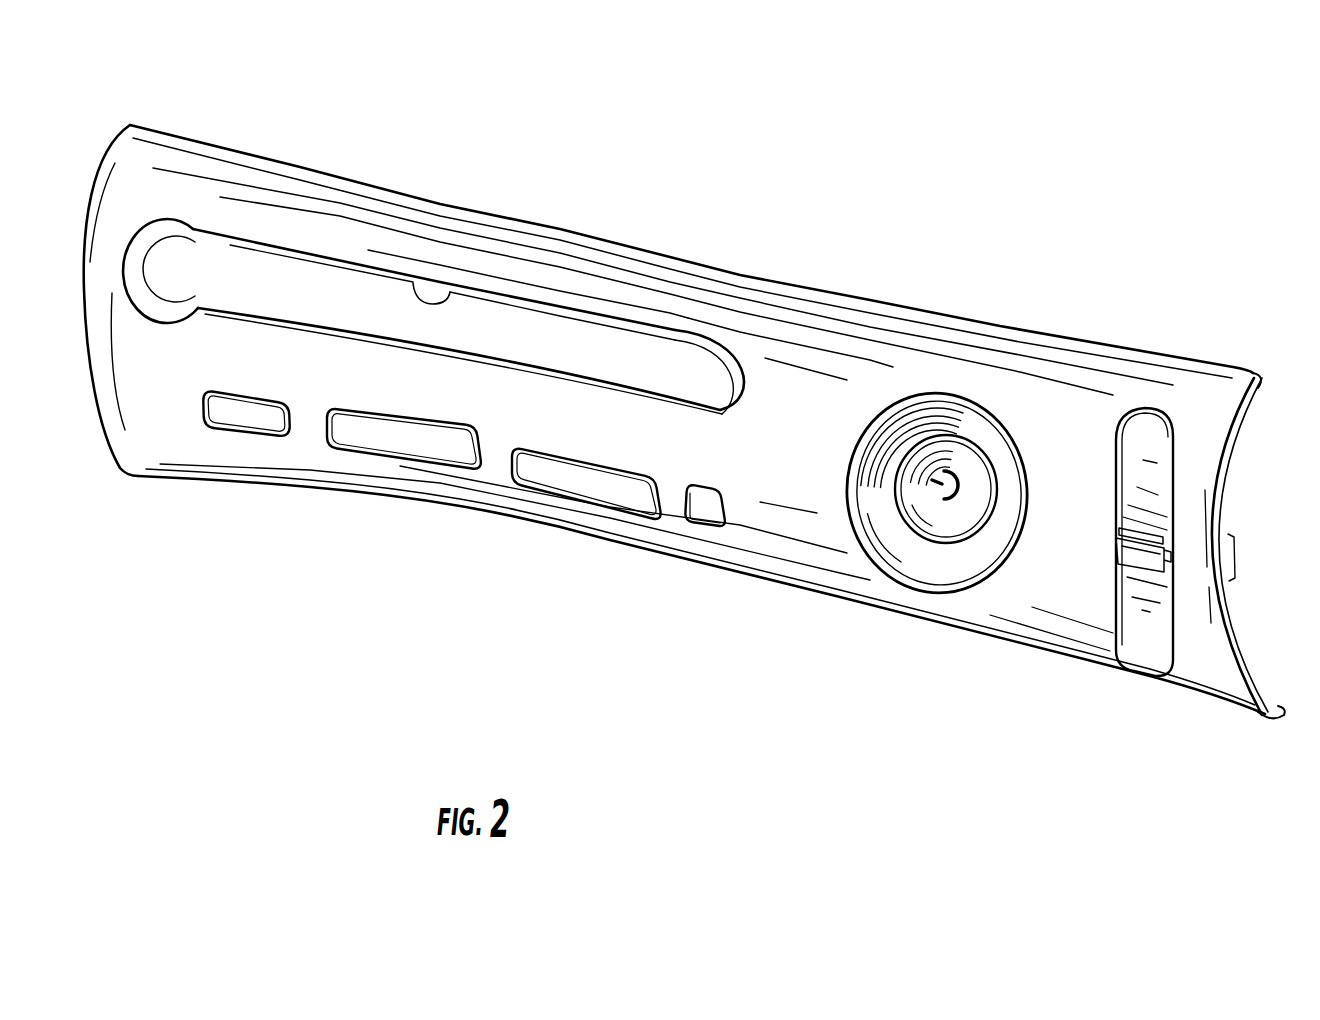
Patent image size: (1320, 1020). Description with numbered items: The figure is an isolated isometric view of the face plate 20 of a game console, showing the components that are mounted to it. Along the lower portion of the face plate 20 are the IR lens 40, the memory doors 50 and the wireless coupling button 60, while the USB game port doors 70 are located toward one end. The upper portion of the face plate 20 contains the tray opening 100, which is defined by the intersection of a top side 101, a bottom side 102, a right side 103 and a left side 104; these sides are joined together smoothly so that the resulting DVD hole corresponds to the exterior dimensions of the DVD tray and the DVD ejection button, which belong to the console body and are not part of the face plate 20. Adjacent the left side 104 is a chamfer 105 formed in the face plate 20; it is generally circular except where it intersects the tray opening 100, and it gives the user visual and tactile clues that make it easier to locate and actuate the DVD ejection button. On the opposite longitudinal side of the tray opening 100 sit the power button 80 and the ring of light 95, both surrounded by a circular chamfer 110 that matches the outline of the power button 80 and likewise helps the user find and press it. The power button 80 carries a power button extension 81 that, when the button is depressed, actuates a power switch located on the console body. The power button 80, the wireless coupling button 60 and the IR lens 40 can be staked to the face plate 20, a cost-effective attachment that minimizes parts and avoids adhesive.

The face plate 20 is at (118, 468).
The IR lens 40 is at (243, 418).
The memory doors 50 is at (565, 480).
The wireless coupling button 60 is at (708, 512).
The USB game port doors 70 is at (1158, 480).
The power button 80 is at (937, 523).
The power button extension 81 is at (951, 468).
The ring of light 95 is at (957, 545).
The tray opening 100 is at (463, 248).
The top side 101 is at (475, 353).
The bottom side 102 is at (497, 304).
The right side 103 is at (692, 340).
The left side 104 is at (145, 266).
The chamfer 105 is at (167, 218).
The chamfer 110 is at (910, 405).